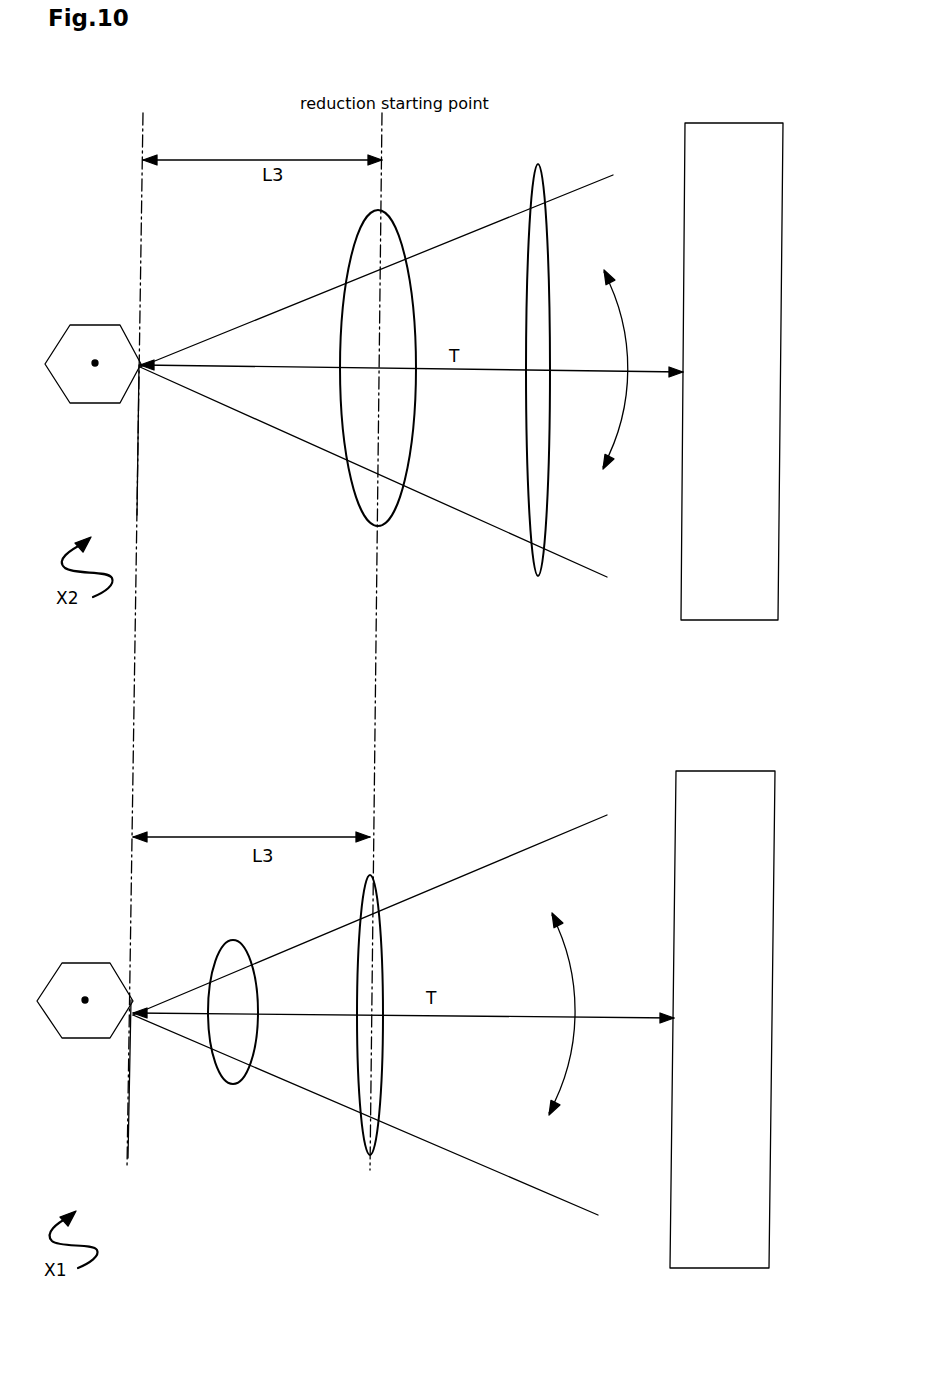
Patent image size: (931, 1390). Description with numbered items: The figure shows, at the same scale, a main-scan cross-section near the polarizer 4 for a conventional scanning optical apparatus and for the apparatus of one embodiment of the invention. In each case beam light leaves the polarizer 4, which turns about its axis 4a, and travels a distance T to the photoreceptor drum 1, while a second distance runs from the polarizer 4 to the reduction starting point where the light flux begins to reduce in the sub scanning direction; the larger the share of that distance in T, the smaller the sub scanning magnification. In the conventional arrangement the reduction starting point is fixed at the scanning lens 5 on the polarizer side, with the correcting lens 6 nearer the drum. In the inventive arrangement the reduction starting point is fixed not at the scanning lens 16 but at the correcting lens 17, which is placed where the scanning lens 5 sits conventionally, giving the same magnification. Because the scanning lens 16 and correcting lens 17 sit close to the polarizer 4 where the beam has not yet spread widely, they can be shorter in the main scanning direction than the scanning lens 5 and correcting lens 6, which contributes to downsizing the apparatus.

The photoreceptor drum 1 is at (783, 272).
The polarizer 4 is at (90, 403).
The rotation axis of polygon mirror 4a is at (95, 360).
The scanning lens 5 is at (395, 508).
The correcting lens 6 is at (547, 480).
The scanning lens 16 is at (233, 1084).
The correcting lens 17 is at (383, 1050).